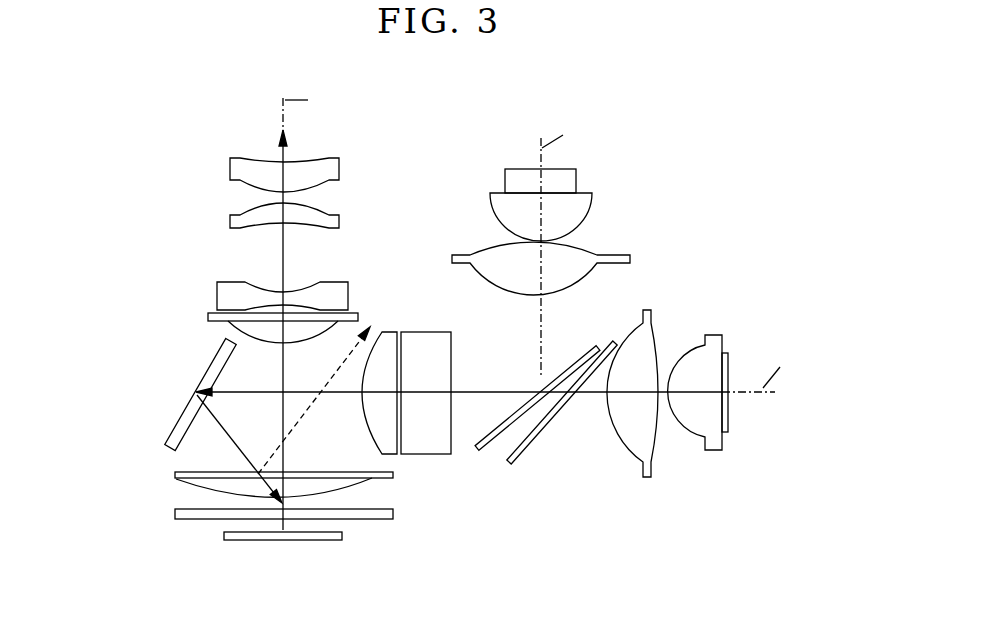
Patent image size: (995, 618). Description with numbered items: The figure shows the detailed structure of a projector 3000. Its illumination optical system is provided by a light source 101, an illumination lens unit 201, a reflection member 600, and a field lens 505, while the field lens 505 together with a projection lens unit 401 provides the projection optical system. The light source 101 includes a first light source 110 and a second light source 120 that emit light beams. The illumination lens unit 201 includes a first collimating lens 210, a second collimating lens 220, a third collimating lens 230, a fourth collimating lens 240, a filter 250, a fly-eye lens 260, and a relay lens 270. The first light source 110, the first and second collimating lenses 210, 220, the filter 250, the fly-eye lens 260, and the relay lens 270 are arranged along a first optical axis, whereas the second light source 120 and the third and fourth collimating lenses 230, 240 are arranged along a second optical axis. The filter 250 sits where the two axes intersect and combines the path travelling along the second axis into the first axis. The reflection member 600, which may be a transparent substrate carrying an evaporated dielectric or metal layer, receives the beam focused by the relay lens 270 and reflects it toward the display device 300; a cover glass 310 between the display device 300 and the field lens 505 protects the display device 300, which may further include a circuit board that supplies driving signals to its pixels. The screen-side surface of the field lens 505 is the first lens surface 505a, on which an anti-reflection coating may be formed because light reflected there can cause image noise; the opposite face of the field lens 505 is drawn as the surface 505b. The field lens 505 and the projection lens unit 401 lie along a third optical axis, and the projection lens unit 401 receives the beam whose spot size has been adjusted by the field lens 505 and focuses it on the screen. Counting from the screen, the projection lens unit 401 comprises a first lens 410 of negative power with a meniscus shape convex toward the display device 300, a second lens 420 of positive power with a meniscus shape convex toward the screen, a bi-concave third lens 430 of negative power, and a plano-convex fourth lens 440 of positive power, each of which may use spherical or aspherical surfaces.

The projector 3000 is at (750, 100).
The light source 101 is at (452, 213).
The illumination lens unit 201 is at (722, 266).
The projection lens unit 401 is at (157, 158).
The first lens 410 is at (230, 171).
The second lens 420 is at (230, 222).
The third lens 430 is at (217, 300).
The fourth lens 440 is at (208, 317).
The reflection member 600 is at (188, 415).
The field lens 505 is at (177, 482).
The first lens surface 505a is at (228, 472).
The curved lens 505b is at (197, 488).
The cover glass 310 is at (191, 519).
The display device 300 is at (268, 540).
The relay lens 270 is at (392, 445).
The fly-eye lens 260 is at (428, 445).
The filter 250 is at (554, 434).
The second collimating lens 220 is at (632, 442).
The first collimating lens 210 is at (698, 425).
The first light source 110 is at (728, 418).
The second light source 120 is at (570, 181).
The third collimating lens 230 is at (577, 214).
The fourth collimating lens 240 is at (628, 259).